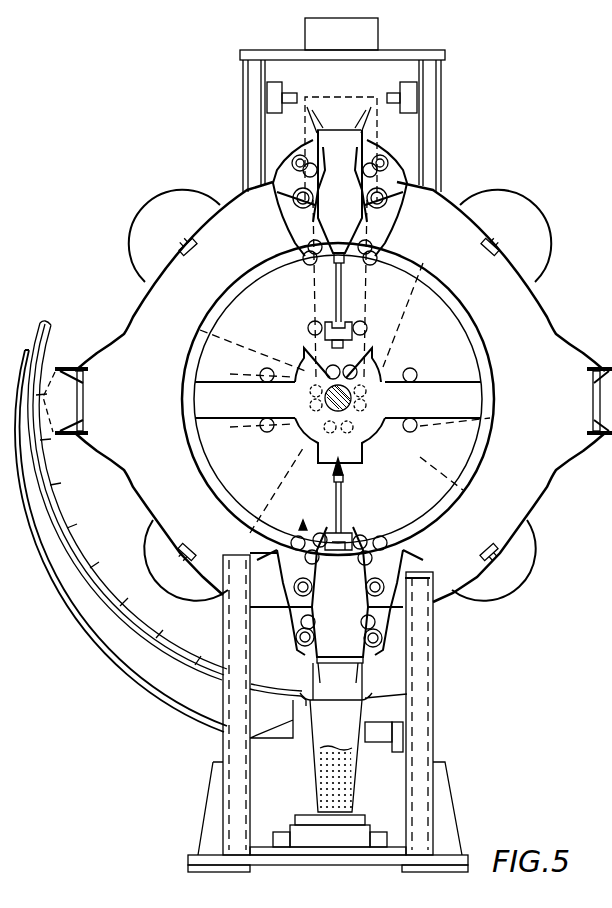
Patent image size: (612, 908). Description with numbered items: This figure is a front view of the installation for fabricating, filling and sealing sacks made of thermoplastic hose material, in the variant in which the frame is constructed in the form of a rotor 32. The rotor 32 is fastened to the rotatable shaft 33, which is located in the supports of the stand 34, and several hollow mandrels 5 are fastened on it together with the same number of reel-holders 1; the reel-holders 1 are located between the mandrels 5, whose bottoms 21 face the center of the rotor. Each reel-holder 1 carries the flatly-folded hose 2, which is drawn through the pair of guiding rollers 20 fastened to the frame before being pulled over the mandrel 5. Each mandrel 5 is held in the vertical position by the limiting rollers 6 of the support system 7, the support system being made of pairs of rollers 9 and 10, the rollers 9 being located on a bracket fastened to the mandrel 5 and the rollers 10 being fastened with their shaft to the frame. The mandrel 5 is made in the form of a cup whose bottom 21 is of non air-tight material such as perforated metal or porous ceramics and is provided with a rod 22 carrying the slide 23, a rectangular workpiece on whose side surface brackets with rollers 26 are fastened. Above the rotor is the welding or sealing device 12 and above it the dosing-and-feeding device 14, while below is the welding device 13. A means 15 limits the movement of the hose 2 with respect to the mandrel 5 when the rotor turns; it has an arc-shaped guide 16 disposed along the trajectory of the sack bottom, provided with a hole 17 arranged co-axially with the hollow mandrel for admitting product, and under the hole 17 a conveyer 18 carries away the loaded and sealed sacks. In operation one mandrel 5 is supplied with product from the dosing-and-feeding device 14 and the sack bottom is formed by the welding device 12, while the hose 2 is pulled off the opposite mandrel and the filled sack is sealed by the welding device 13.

The reel-holder 1 is at (190, 262).
The flatly-folded hose 2 is at (258, 337).
The hollow mandrel 5 is at (320, 230).
The limiting rollers 6 is at (293, 210).
The support system 7 is at (303, 528).
The rollers 9 is at (389, 178).
The rollers 10 is at (312, 157).
The welding or sealing device 12 is at (393, 96).
The welding device 13 is at (373, 742).
The dosing-and-feeding device 14 is at (315, 35).
The means limiting the movement of the hose 15 is at (78, 622).
The arc-shaped guide 16 is at (70, 537).
The hole 17 is at (353, 702).
The conveyer 18 is at (307, 837).
The guiding rollers 20 is at (317, 355).
The bottom 21 is at (322, 272).
The rod 22 is at (340, 290).
The slide 23 is at (350, 341).
The rollers 26 is at (360, 540).
The rotor 32 is at (537, 489).
The rotatable shaft 33 is at (352, 414).
The stand 34 is at (425, 748).